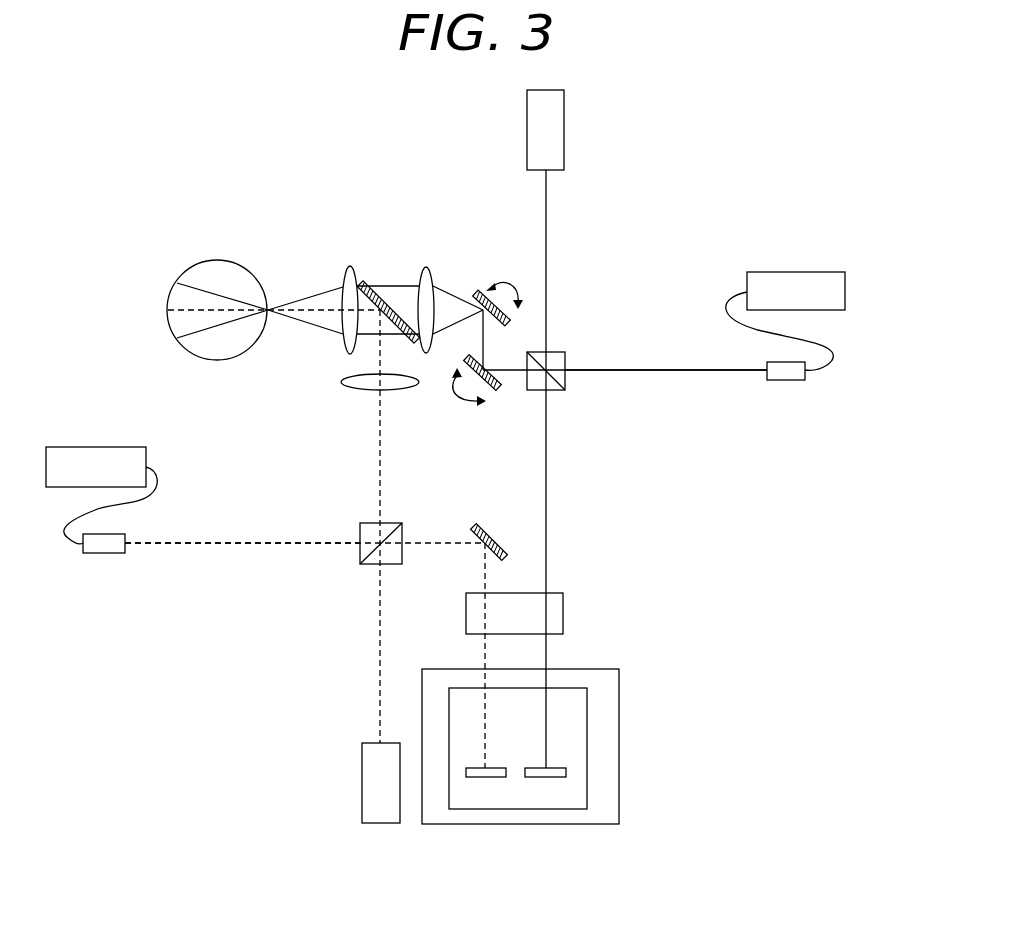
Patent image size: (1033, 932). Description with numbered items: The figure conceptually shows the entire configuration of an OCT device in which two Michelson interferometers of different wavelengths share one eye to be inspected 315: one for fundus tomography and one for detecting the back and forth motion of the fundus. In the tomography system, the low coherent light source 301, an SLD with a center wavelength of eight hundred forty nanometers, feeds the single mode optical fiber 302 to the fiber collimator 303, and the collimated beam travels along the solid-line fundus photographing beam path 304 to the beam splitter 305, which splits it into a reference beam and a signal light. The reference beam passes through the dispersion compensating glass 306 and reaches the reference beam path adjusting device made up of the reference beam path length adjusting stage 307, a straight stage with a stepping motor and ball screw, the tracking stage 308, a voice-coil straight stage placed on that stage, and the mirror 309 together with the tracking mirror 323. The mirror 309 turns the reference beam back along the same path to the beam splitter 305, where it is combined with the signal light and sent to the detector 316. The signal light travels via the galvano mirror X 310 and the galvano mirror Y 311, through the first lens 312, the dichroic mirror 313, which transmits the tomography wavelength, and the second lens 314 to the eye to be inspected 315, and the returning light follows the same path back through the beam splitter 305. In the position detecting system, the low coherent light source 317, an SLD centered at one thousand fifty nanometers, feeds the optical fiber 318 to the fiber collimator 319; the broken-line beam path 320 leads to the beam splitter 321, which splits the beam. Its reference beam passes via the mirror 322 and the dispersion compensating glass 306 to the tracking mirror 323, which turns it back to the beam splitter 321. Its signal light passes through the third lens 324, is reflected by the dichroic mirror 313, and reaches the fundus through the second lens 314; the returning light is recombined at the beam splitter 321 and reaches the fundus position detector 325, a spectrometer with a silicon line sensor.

The low coherent light source for fundus tomography 301 is at (810, 272).
The optical fiber 302 is at (833, 347).
The fiber collimator 303 is at (790, 381).
The fundus photographing beam path 304 is at (658, 369).
The beam splitter 305 is at (557, 390).
The dispersion compensating glass 306 is at (563, 607).
The reference beam path length adjusting stage 307 is at (619, 693).
The tracking stage 308 is at (587, 747).
The mirror 309 is at (553, 777).
The galvano mirror X 310 is at (498, 392).
The galvano mirror Y 311 is at (482, 293).
The first lens 312 is at (428, 268).
The dichroic mirror 313 is at (365, 283).
The second lens 314 is at (343, 268).
The eye to be inspected 315 is at (222, 262).
The detector for fundus tomography 316 is at (565, 117).
The low coherent light source for detecting a position of a fundus 317 is at (107, 447).
The optical fiber 318 is at (157, 483).
The fiber collimator 319 is at (102, 553).
The beam path for detecting a position of a fundus 320 is at (217, 545).
The beam splitter 321 is at (368, 565).
The mirror 322 is at (475, 525).
The tracking mirror 323 is at (478, 777).
The third lens 324 is at (355, 392).
The fundus position detector 325 is at (378, 823).